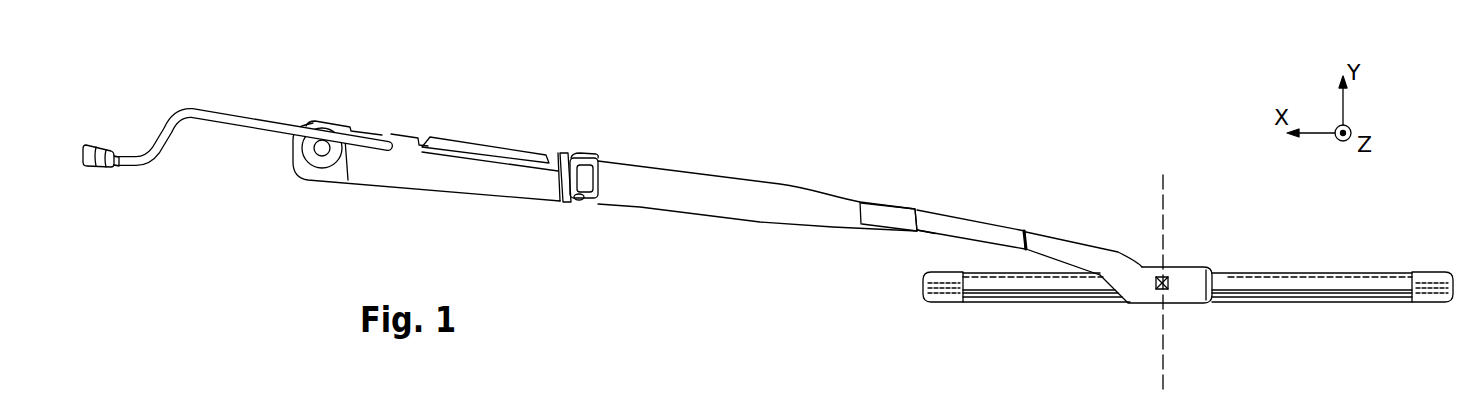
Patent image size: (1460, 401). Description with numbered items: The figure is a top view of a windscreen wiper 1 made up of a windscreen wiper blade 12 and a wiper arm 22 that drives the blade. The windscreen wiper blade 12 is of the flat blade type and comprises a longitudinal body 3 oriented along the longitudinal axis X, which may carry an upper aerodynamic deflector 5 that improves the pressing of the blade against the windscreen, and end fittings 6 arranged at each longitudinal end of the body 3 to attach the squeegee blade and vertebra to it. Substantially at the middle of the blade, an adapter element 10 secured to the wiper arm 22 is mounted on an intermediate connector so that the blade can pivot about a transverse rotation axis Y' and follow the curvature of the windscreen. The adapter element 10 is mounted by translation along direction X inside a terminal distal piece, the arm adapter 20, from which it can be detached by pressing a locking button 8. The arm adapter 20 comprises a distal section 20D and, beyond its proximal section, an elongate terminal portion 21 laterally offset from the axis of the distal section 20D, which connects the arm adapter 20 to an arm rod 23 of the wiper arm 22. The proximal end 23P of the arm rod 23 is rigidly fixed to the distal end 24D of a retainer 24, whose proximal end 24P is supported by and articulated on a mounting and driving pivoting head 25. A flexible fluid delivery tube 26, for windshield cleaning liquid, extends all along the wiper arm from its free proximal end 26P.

The windscreen wiper 1 is at (760, 131).
The longitudinal body 3 is at (1379, 264).
The upper aerodynamic deflector 5 is at (1300, 290).
The end fittings 6 is at (942, 283).
The locking button 8 is at (1158, 289).
The adapter element 10 is at (1228, 282).
The windscreen wiper blade 12 is at (1052, 320).
The arm adapter 20 is at (1143, 261).
The distal section 20D is at (1183, 291).
The terminal portion 21 is at (1043, 239).
The wiper arm 22 is at (686, 236).
The arm rod 23 is at (987, 215).
The proximal end of the arm rod 23P is at (927, 229).
The retainer 24 is at (642, 160).
The distal end of the retainer 24D is at (883, 213).
The proximal end of the retainer 24P is at (577, 200).
The mounting and driving pivoting head 25 is at (400, 193).
The delivery tube 26 is at (265, 112).
The free proximal end of the delivery tube 26P is at (84, 168).
The rotation axis Y' is at (1193, 264).